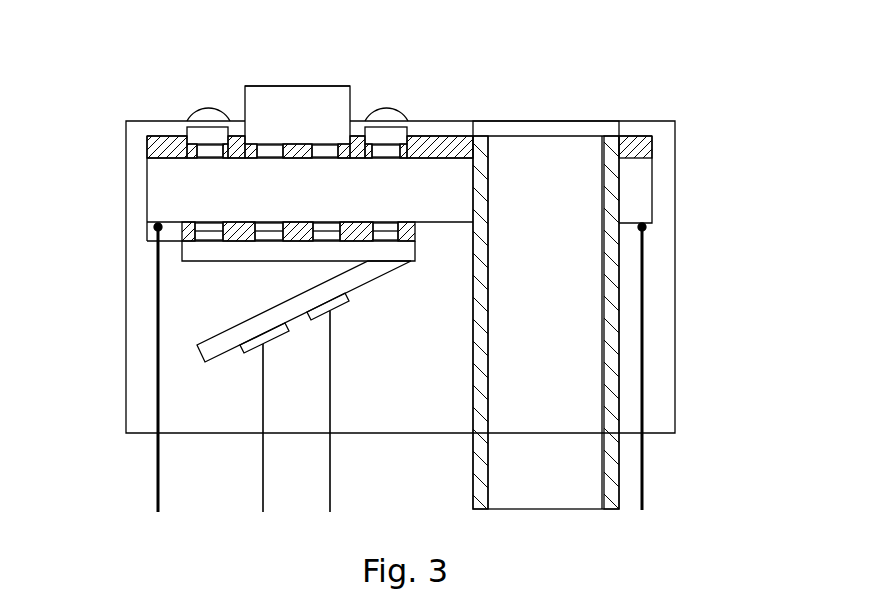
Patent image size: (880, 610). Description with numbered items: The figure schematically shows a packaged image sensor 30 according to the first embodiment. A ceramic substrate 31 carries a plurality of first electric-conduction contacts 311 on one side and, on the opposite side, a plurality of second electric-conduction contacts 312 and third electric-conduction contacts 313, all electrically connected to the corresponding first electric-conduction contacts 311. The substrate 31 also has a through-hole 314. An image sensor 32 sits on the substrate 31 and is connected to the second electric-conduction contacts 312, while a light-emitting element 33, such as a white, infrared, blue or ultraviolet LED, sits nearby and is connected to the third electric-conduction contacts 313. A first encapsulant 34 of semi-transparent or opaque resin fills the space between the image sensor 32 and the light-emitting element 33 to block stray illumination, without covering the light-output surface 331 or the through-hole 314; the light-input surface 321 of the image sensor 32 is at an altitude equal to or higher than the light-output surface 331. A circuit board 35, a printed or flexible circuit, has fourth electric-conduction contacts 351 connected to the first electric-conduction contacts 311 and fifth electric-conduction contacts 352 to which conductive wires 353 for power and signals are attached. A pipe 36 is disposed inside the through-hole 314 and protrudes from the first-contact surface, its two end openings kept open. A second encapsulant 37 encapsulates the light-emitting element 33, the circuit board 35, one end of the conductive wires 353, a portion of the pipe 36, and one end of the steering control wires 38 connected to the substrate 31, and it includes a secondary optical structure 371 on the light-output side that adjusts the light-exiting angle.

The packaged image sensor 30 is at (83, 82).
The substrate 31 is at (147, 175).
The first electric-conduction contacts 311 is at (147, 218).
The second electric-conduction contacts 312 is at (325, 143).
The third electric-conduction contacts 313 is at (147, 145).
The through-hole 314 is at (620, 199).
The image sensor 32 is at (277, 100).
The light-input surface 321 is at (291, 84).
The light-emitting element 33 is at (210, 120).
The light-output surface 331 is at (397, 110).
The first encapsulant 34 is at (447, 137).
The circuit board 35 is at (203, 343).
The fourth electric-conduction contacts 351 is at (195, 232).
The fifth electric-conduction contacts 352 is at (250, 352).
The conductive wires 353 is at (262, 470).
The pipe 36 is at (610, 319).
The second encapsulant 37 is at (126, 372).
The secondary optical structure 371 is at (195, 112).
The steering control wires 38 is at (155, 470).